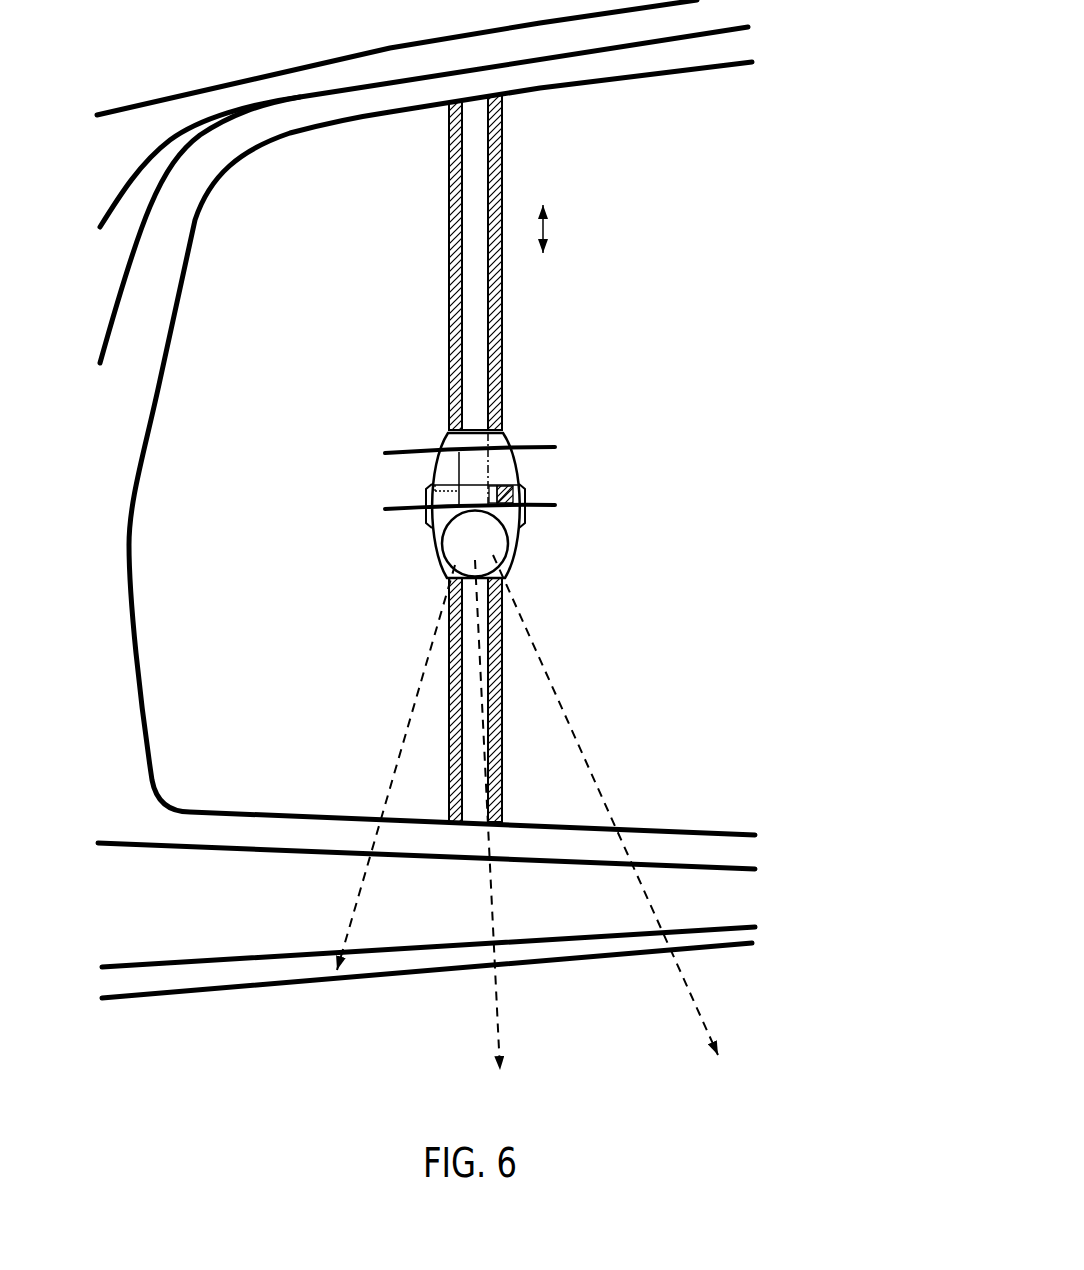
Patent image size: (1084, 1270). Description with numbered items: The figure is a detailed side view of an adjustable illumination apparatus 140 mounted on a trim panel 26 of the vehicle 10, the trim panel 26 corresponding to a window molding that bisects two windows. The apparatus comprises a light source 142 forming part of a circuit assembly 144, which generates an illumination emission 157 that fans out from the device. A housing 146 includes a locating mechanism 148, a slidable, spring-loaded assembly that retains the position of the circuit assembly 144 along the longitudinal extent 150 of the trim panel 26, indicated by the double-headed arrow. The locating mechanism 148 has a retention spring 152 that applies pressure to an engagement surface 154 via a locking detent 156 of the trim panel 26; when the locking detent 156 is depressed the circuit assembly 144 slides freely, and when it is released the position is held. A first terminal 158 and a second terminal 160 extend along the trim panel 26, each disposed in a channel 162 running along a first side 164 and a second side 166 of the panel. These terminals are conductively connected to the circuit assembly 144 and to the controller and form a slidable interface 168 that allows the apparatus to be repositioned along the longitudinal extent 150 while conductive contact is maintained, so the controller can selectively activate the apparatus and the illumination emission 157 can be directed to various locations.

The vehicle 10 is at (647, 341).
The adjustable illumination apparatus 140 is at (647, 341).
The trim panel 26 is at (475, 236).
The first side 164 is at (414, 461).
The first terminal 158 is at (449, 291).
The channel 162 is at (533, 458).
The second side 166 is at (533, 458).
The second terminal 160 is at (498, 290).
The longitudinal extent 150 is at (545, 229).
The circuit assembly 144 is at (428, 553).
The engagement surface 154 is at (457, 470).
The housing 146 is at (504, 441).
The retention spring 152 is at (517, 483).
The locating mechanism 148 is at (413, 491).
The locking detent 156 is at (527, 513).
The light source 142 is at (498, 539).
The slidable interface 168 is at (562, 453).
The illumination emission 157 is at (358, 888).